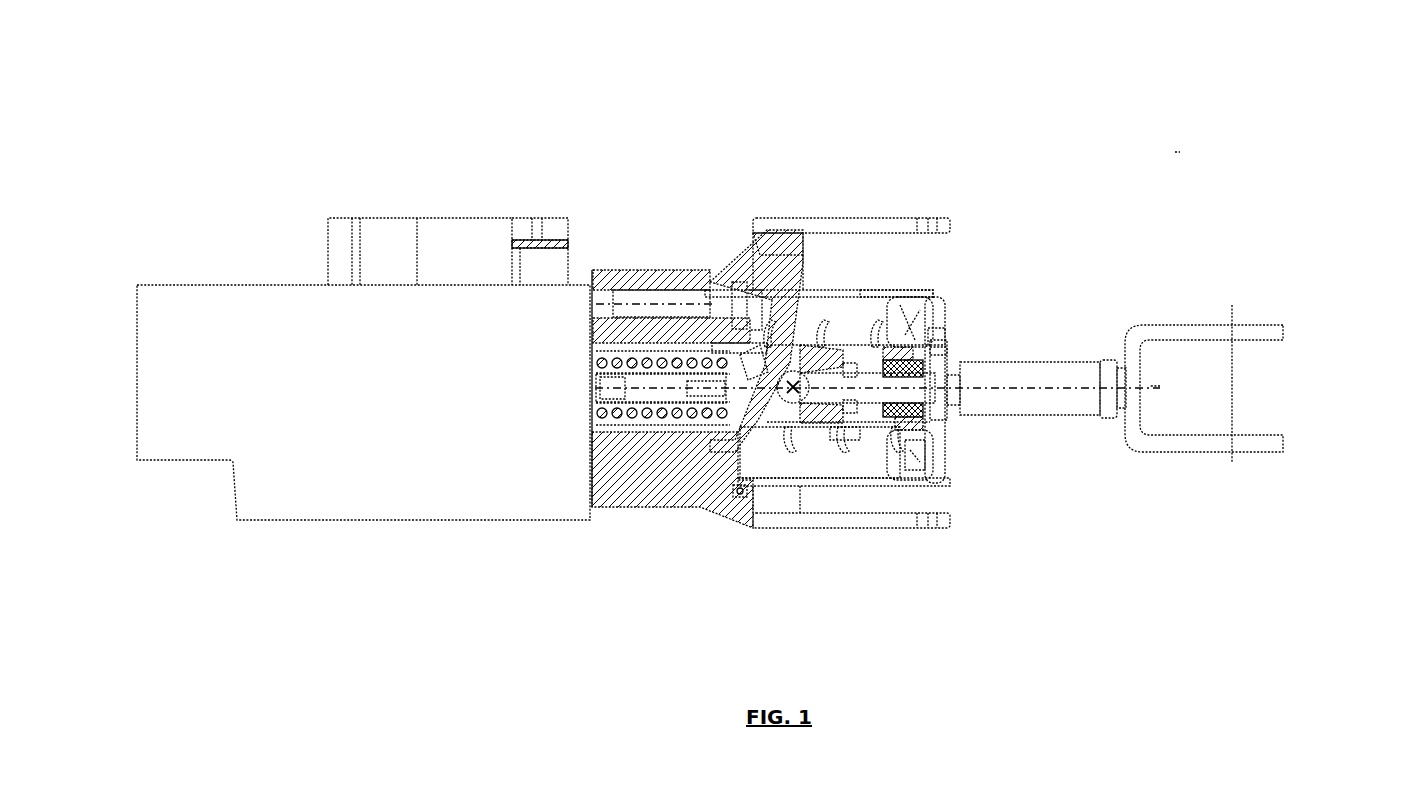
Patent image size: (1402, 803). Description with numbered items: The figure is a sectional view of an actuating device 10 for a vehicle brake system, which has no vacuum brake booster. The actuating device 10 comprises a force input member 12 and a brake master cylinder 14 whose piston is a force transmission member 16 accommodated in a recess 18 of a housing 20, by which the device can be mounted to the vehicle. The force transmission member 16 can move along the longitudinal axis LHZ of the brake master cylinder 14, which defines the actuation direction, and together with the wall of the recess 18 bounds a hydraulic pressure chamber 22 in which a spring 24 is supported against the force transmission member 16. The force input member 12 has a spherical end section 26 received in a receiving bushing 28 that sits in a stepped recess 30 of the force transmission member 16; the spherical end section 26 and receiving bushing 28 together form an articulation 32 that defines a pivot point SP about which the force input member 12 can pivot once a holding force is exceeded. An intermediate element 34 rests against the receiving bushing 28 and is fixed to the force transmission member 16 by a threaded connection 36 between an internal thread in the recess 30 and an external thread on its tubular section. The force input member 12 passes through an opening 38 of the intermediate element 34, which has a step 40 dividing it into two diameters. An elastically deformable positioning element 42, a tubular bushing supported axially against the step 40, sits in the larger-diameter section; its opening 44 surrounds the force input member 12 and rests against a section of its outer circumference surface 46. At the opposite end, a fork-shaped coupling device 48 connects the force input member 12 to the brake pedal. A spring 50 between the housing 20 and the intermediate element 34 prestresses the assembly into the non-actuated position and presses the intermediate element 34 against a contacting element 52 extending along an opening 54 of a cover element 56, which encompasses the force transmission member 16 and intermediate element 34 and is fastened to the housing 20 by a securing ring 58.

The actuating device 10 is at (1180, 148).
The force input member 12 is at (1068, 368).
The brake master cylinder 14 is at (719, 322).
The force transmission member 16 is at (746, 368).
The recess 18 is at (667, 345).
The housing 20 is at (697, 482).
The hydraulic pressure chamber 22 is at (618, 350).
The spring 24 is at (632, 413).
The spherical end section 26 is at (803, 399).
The receiving bushing 28 is at (776, 370).
The recess 30 is at (843, 358).
The articulation 32 is at (813, 355).
The intermediate element 34 is at (940, 335).
The threaded connection 36 is at (880, 425).
The opening 38 is at (900, 413).
The step 40 is at (887, 363).
The positioning element 42 is at (912, 412).
The opening 44 is at (922, 407).
The outer circumference surface 46 is at (925, 373).
The coupling device 48 is at (1277, 333).
The spring 50 is at (848, 452).
The contacting element 52 is at (940, 342).
The opening 54 is at (938, 335).
The cover element 56 is at (891, 292).
The securing ring 58 is at (749, 499).
The pivot point SP is at (792, 395).
The longitudinal axis of the brake master cylinder LHZ is at (1160, 388).